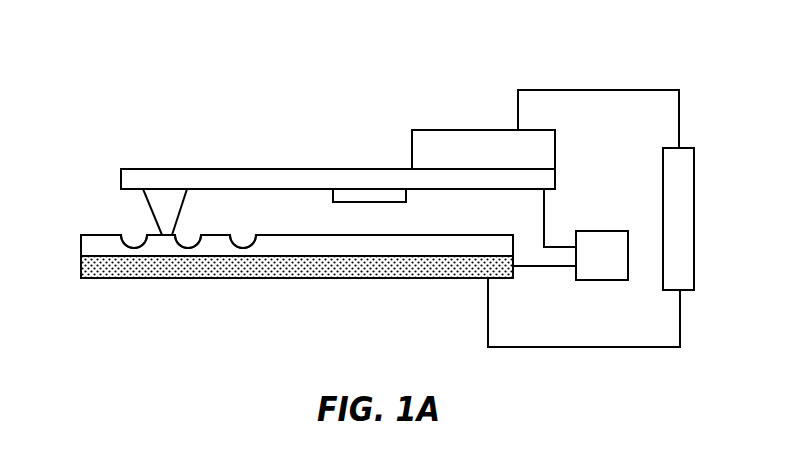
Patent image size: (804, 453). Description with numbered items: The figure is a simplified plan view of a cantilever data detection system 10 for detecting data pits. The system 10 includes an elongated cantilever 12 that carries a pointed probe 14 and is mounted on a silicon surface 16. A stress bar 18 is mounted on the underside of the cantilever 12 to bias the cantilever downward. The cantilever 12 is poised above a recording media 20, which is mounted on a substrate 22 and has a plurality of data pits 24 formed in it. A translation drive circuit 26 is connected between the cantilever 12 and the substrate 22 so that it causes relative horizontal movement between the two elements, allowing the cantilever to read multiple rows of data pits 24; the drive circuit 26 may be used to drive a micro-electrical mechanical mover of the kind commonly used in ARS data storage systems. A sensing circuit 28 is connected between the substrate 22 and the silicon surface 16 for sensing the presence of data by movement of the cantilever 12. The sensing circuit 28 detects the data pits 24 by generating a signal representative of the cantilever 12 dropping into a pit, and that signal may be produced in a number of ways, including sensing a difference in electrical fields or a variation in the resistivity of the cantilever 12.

The cantilever data detection system 10 is at (148, 68).
The cantilever 12 is at (188, 183).
The pointed probe 14 is at (163, 209).
The silicon surface 16 is at (462, 140).
The stress bar 18 is at (360, 193).
The recording media 20 is at (328, 252).
The substrate 22 is at (353, 270).
The data pits 24 is at (237, 243).
The translation drive circuit 26 is at (600, 265).
The sensing circuit 28 is at (685, 270).